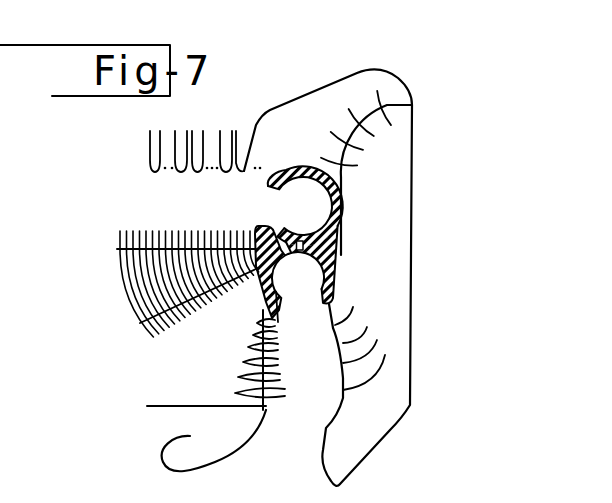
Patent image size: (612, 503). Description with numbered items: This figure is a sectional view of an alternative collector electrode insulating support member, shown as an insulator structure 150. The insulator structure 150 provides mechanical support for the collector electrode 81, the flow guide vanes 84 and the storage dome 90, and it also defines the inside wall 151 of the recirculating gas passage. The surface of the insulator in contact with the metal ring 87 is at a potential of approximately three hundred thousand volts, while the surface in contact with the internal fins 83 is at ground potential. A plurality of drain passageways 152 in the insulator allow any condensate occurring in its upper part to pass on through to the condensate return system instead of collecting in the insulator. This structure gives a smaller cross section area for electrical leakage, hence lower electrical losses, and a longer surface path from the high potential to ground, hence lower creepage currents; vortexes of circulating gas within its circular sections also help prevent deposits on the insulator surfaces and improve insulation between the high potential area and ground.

The collector electrode 81 is at (150, 235).
The internal fins 83 is at (411, 323).
The flow guide vanes 84 is at (268, 362).
The metal ring 87 is at (264, 303).
The storage dome 90 is at (224, 453).
The insulator structure 150 is at (301, 165).
The inside wall of the recirculating gas passage 151 is at (344, 222).
The drain passageways 152 is at (294, 251).